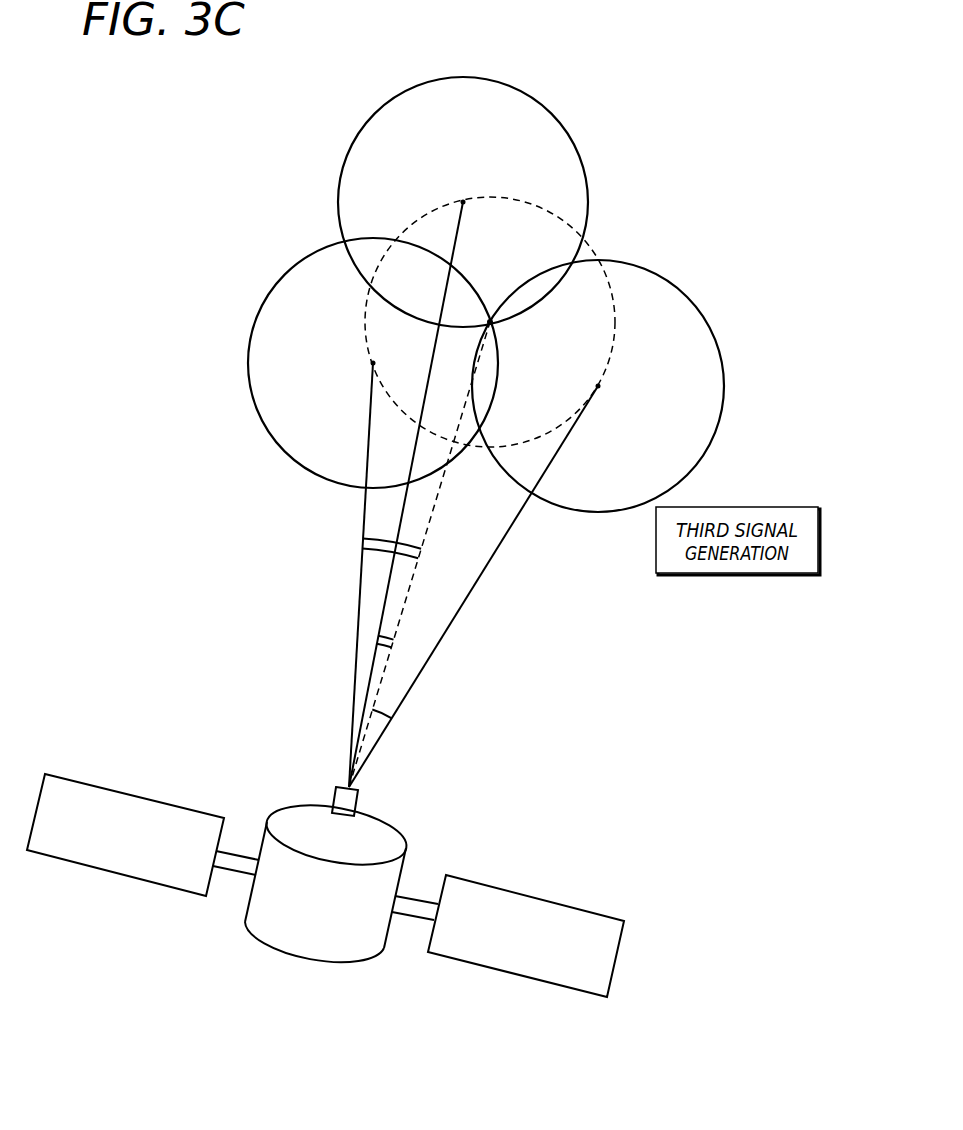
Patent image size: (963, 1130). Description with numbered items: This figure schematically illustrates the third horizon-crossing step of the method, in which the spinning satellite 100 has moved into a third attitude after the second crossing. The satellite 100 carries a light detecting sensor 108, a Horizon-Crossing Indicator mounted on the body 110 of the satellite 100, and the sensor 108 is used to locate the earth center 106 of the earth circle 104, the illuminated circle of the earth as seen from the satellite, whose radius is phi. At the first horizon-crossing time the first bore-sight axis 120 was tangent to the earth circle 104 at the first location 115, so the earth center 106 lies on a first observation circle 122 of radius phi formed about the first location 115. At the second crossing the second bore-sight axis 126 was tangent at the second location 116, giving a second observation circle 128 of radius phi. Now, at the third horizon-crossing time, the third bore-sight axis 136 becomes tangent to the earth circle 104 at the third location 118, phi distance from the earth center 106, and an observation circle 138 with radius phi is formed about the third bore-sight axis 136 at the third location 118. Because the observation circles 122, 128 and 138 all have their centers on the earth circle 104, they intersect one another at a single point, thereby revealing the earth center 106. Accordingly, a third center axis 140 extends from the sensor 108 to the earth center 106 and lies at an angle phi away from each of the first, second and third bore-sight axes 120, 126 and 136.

The satellite 100 is at (356, 880).
The earth circle 104 is at (587, 242).
The earth center 106 is at (490, 322).
The light detecting sensor 108 is at (362, 806).
The body 110 is at (405, 842).
The first location 115 is at (373, 363).
The second location 116 is at (463, 202).
The third location 118 is at (598, 388).
The first bore-sight axis 120 is at (361, 568).
The first observation circle 122 is at (280, 278).
The second bore-sight axis 126 is at (380, 625).
The second observation circle 128 is at (543, 102).
The third bore-sight axis 136 is at (485, 567).
The observation circle 138 is at (718, 338).
The third center axis 140 is at (432, 513).